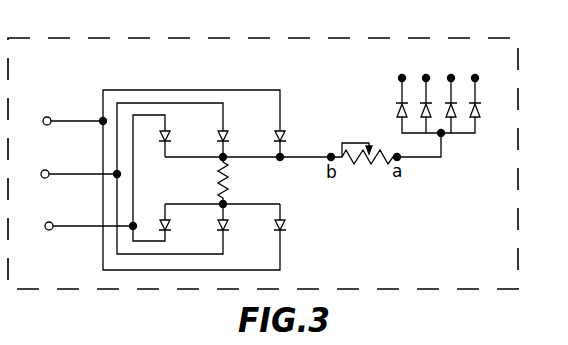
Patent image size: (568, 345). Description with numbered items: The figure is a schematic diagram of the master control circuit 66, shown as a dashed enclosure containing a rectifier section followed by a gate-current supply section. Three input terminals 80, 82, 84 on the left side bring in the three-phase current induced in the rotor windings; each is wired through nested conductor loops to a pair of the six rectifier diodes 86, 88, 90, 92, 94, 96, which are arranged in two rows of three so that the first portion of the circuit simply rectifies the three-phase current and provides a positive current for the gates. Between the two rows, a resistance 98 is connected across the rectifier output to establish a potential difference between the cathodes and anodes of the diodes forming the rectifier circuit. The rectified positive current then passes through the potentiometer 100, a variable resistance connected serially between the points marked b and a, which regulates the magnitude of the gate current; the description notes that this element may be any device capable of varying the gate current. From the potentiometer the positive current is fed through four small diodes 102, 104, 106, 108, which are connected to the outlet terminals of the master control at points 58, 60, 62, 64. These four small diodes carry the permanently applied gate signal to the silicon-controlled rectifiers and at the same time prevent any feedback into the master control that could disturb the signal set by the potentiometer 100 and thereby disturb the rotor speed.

The outlet terminal point 58 is at (400, 75).
The outlet terminal point 60 is at (425, 76).
The outlet terminal point 62 is at (450, 76).
The outlet terminal point 64 is at (477, 77).
The master control circuit 66 is at (471, 261).
The output terminal 80 is at (50, 115).
The output terminal 82 is at (47, 168).
The output terminal 84 is at (50, 220).
The rectifier diode 86 is at (171, 137).
The rectifier diode 88 is at (229, 137).
The rectifier diode 90 is at (286, 137).
The rectifier diode 92 is at (170, 226).
The rectifier diode 94 is at (228, 227).
The rectifier diode 96 is at (285, 227).
The resistance 98 is at (232, 181).
The potentiometer 100 is at (363, 162).
The small diode 102 is at (400, 97).
The small diode 104 is at (423, 117).
The small diode 106 is at (453, 118).
The small diode 108 is at (476, 102).